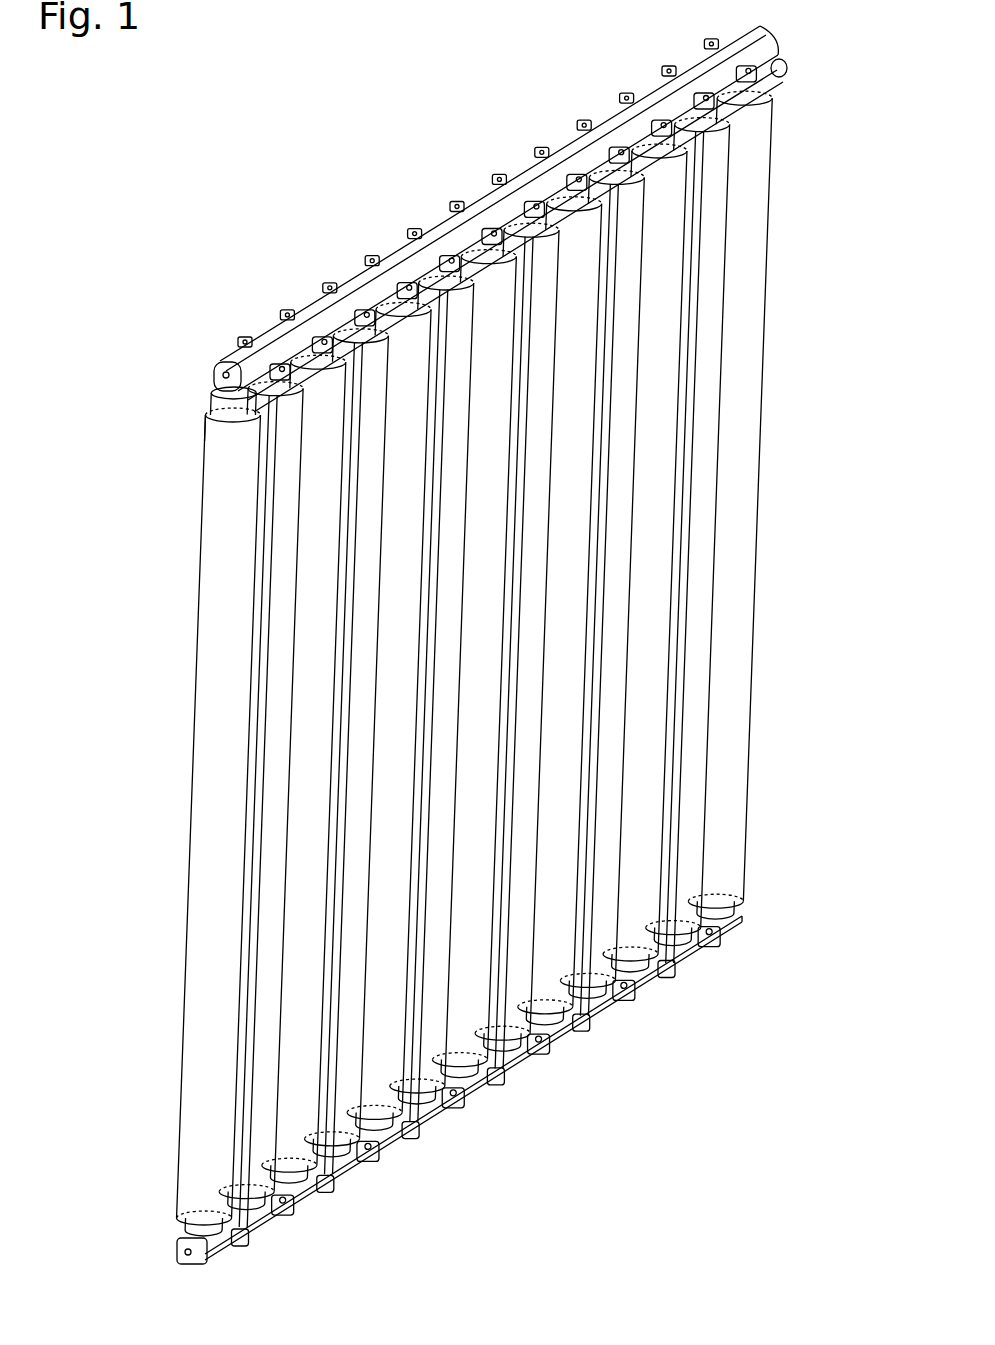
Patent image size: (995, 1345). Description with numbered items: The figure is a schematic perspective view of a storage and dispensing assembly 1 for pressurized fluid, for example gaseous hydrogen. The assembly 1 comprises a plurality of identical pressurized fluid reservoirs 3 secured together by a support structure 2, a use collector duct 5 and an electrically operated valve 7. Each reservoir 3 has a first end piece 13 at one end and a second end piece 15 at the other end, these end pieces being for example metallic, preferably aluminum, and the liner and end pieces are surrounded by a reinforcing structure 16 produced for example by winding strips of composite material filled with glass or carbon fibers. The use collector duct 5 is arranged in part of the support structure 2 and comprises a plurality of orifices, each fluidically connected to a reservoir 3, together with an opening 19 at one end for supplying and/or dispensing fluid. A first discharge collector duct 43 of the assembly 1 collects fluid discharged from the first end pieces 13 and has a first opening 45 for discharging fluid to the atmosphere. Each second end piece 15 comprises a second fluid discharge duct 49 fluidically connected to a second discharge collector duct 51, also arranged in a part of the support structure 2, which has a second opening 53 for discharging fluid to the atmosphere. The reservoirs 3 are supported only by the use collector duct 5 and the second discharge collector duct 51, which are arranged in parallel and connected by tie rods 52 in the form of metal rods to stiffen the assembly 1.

The storage and dispensing assembly 1 is at (249, 200).
The support structure 2 is at (514, 164).
The pressurized fluid reservoirs 3 is at (283, 530).
The use collector duct 5 is at (356, 292).
The electrically operated valve 7 is at (207, 372).
The first end piece 13 is at (225, 387).
The second end piece 15 is at (178, 1236).
The reinforcing structure 16 is at (215, 797).
The opening 19 is at (218, 386).
The first discharge collector duct 43 is at (773, 72).
The first opening 45 is at (210, 410).
The second fluid discharge duct 49 is at (270, 1217).
The second discharge collector duct 51 is at (292, 1190).
The tie rods 52 is at (417, 1057).
The second opening 53 is at (172, 1258).